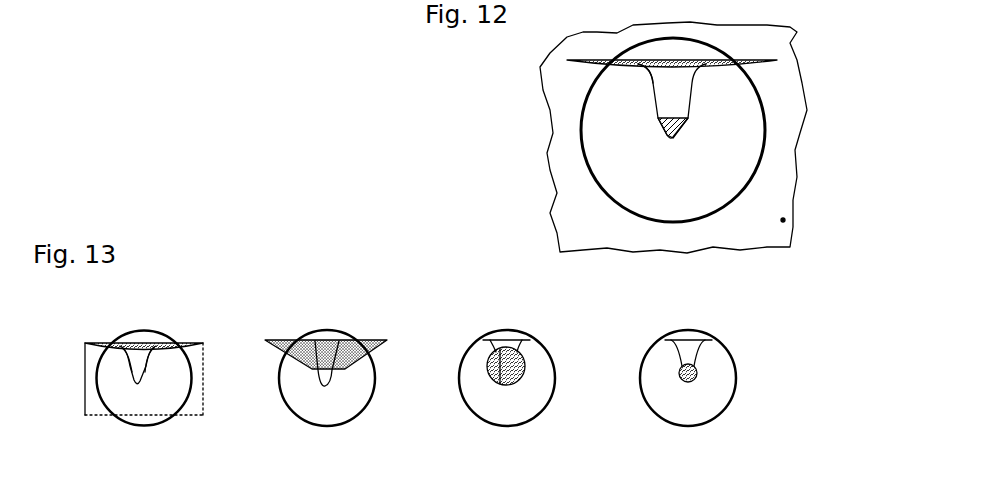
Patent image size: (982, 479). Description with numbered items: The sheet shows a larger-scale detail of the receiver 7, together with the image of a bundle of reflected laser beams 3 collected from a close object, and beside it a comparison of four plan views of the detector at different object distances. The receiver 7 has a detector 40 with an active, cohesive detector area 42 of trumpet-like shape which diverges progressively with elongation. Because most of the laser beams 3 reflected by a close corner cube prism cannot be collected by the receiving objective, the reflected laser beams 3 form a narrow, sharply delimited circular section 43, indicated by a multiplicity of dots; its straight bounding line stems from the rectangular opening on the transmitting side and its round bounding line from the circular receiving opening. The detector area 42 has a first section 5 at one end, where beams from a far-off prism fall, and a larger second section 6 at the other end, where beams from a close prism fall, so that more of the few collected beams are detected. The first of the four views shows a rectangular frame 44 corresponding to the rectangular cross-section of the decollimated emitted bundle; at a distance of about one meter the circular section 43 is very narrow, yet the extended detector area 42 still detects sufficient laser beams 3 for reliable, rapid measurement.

In FIG. 12, the laser beams 3 is at (562, 88).
In FIG. 13, the laser beams 3 is at (116, 348).
In FIG. 12, the first section 5 is at (664, 140).
In FIG. 12, the second section 6 is at (645, 72).
In FIG. 12, the receiver 7 is at (783, 220).
In FIG. 12, the detector 40 is at (597, 205).
In FIG. 12, the detector area 42 is at (710, 108).
In FIG. 13, the detector area 42 is at (162, 373).
In FIG. 12, the circular section 43 is at (768, 48).
In FIG. 13, the circular section 43 is at (193, 333).
In FIG. 13, the rectangular frame 44 is at (85, 360).